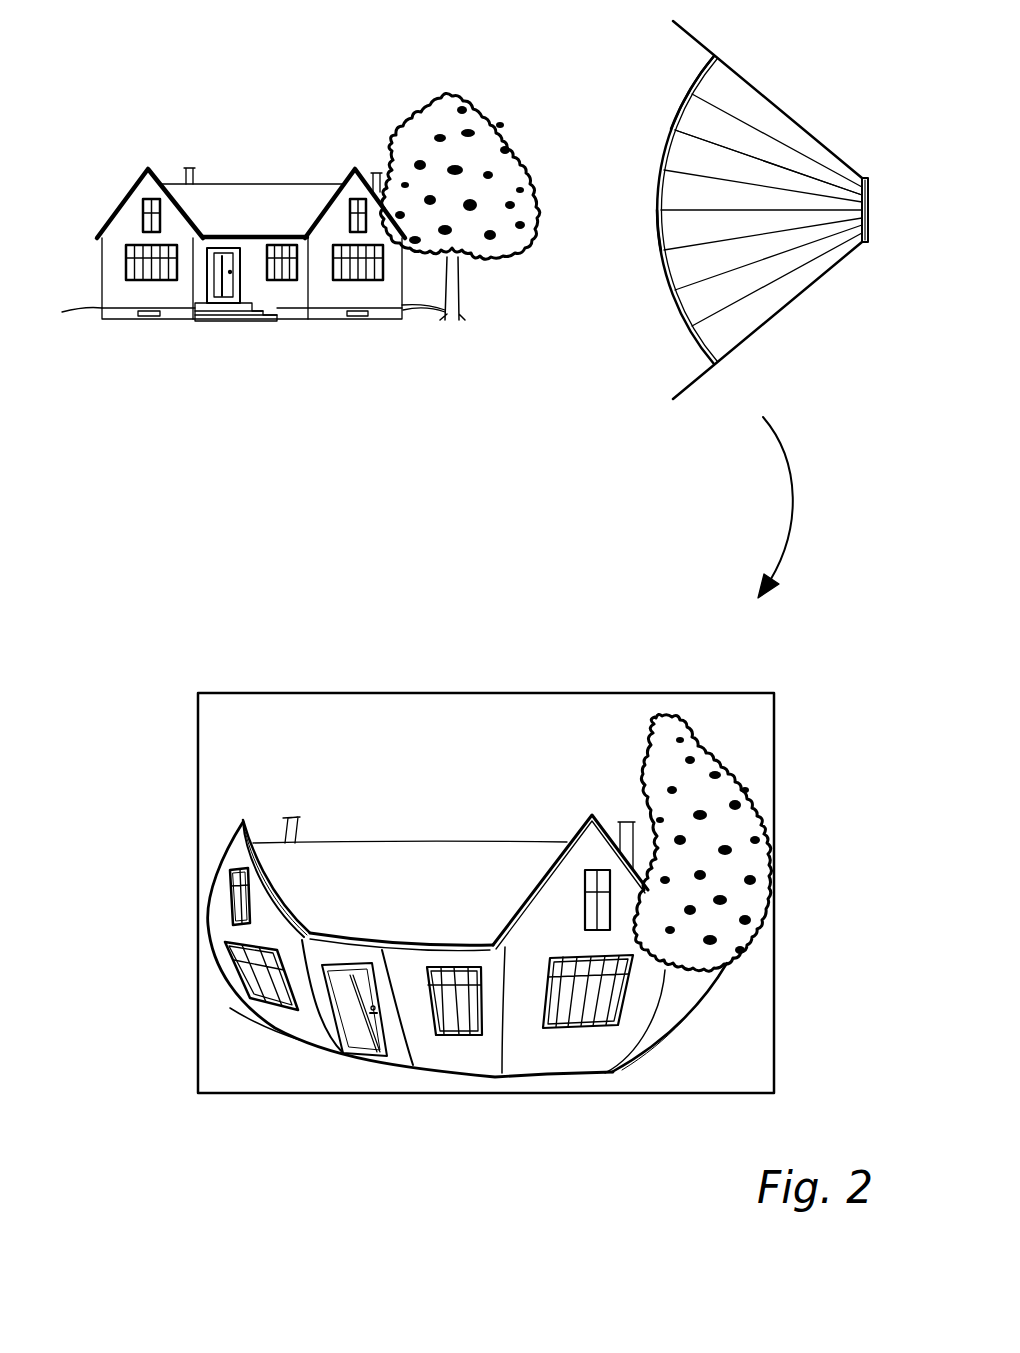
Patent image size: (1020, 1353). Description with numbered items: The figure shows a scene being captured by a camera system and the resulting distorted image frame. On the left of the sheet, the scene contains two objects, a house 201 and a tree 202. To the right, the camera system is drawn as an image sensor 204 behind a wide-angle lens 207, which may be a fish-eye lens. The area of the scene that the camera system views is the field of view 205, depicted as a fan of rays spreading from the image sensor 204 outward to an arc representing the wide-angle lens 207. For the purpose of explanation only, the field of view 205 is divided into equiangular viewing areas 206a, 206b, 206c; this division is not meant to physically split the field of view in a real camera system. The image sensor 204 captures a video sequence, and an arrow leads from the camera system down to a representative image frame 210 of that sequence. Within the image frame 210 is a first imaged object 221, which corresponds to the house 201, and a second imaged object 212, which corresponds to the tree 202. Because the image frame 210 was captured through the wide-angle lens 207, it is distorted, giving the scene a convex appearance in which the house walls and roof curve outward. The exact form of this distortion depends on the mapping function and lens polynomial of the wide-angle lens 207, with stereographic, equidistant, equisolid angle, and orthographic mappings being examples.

The house 201 is at (257, 193).
The tree 202 is at (430, 140).
The image sensor 204 is at (868, 231).
The field of view 205 is at (638, 359).
The equiangular viewing area 206a is at (703, 73).
The equiangular viewing area 206b is at (680, 110).
The equiangular viewing area 206c is at (658, 236).
The wide-angle lens 207 is at (672, 153).
The image frame 210 is at (340, 693).
The second imaged object 212 is at (684, 722).
The first imaged object 221 is at (425, 858).